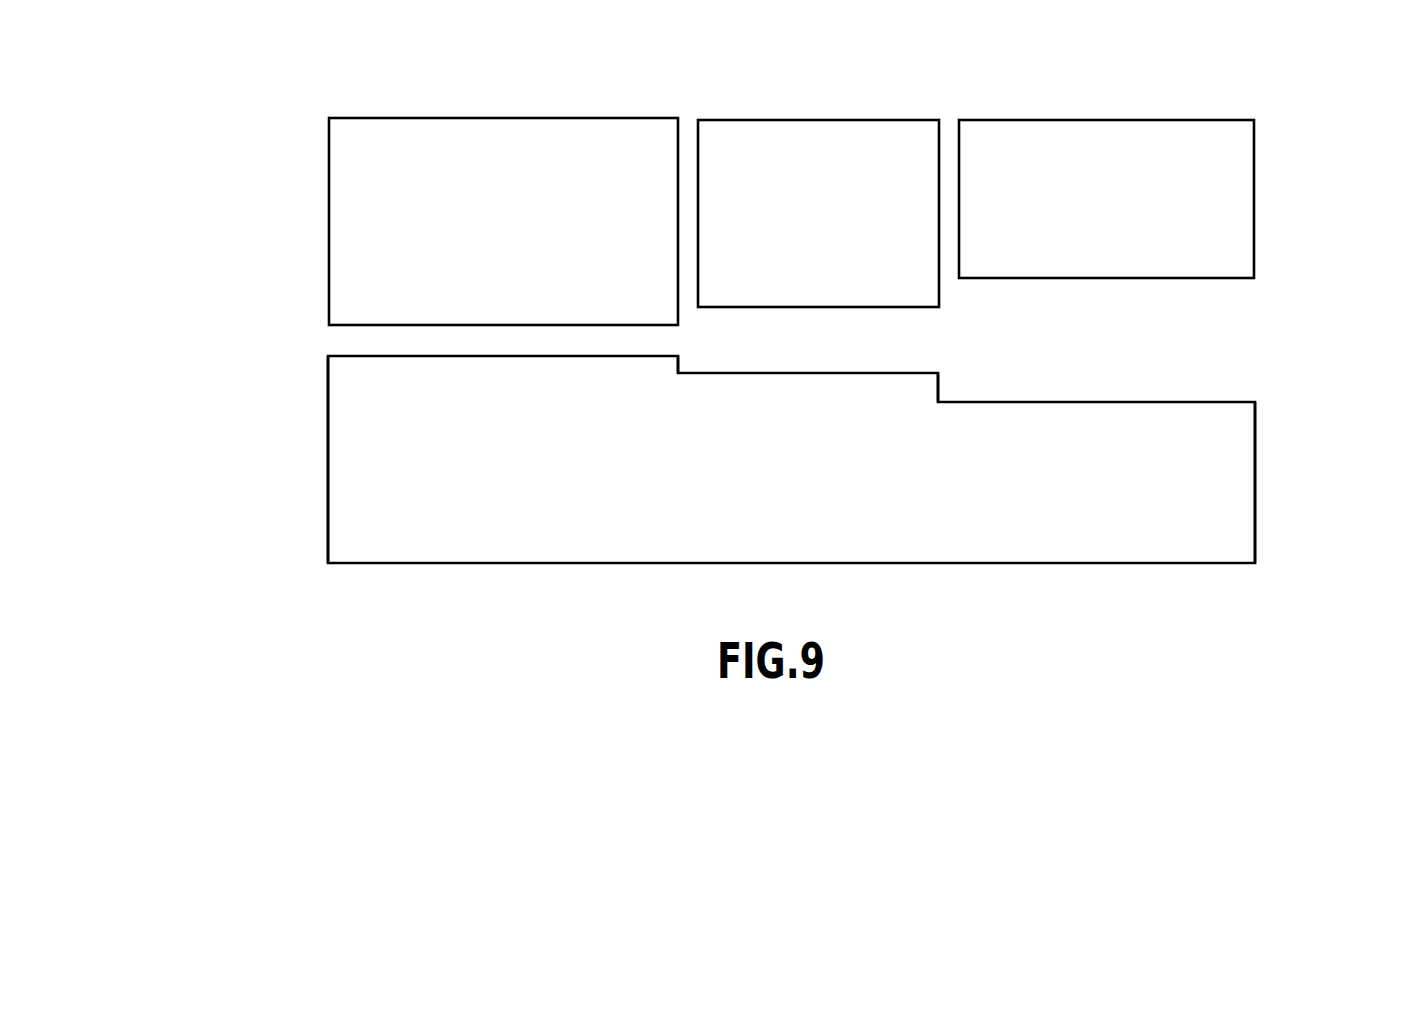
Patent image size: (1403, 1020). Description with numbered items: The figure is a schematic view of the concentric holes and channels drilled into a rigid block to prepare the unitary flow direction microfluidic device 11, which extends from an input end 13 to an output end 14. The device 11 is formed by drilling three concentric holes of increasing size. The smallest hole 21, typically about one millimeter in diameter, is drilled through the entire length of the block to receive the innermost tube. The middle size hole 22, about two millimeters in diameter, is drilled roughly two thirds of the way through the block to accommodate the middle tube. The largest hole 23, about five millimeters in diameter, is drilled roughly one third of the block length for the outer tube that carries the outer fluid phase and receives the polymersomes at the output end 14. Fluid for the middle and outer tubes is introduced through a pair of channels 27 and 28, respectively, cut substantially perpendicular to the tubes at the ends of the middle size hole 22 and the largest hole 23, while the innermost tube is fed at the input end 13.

The unitary flow direction microfluidic device 11 is at (568, 590).
The input end 13 is at (316, 529).
The output end 14 is at (1272, 475).
The smallest hole 21 is at (623, 338).
The middle size hole 22 is at (785, 318).
The largest hole 23 is at (1240, 327).
The channel 27 is at (688, 152).
The channel 28 is at (947, 150).